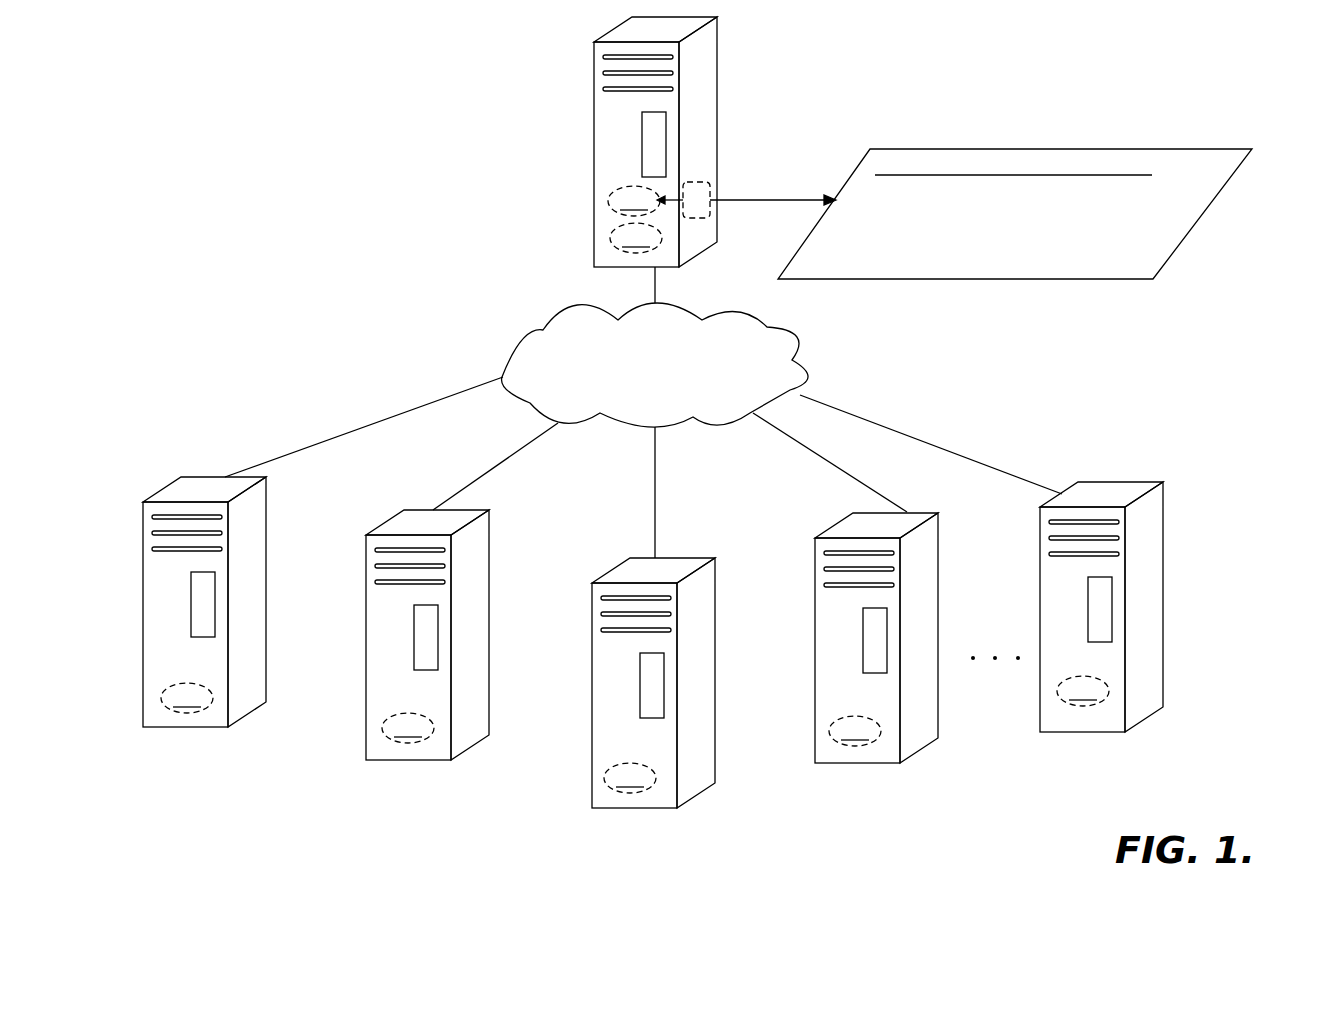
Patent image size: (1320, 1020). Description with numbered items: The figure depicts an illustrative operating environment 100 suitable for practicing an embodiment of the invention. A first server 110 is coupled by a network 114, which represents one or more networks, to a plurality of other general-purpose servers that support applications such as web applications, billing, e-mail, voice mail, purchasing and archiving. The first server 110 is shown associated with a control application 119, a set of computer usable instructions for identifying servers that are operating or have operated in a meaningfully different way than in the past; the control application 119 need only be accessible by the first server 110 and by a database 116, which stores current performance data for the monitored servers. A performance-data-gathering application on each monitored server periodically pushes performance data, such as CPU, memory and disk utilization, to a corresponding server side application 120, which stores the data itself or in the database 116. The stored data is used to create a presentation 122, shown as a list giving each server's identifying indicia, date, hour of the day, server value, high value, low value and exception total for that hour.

The operating environment 100 is at (311, 158).
The first server 110 is at (695, 258).
The network 114 is at (773, 327).
The database 116 is at (697, 180).
The control application 119 is at (645, 201).
The server side application 120 is at (636, 238).
The presentation 122 is at (1210, 212).